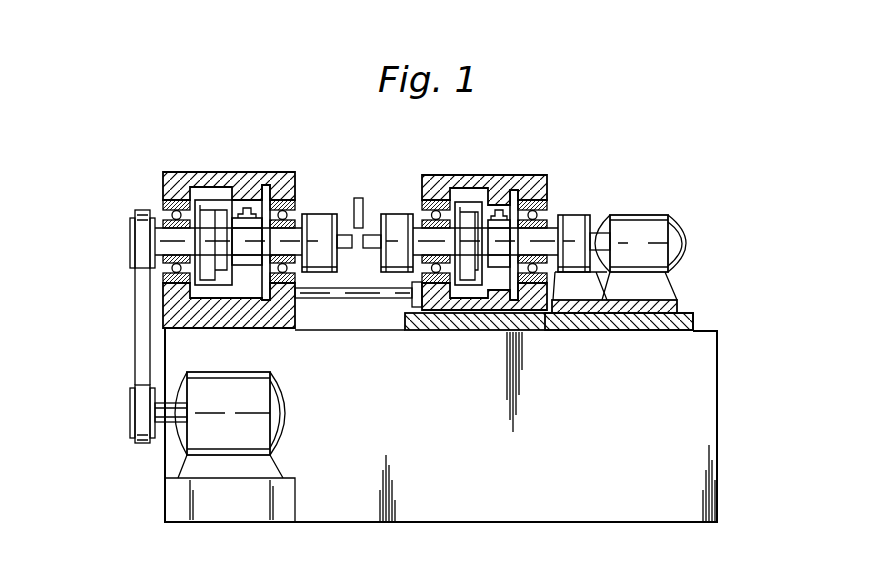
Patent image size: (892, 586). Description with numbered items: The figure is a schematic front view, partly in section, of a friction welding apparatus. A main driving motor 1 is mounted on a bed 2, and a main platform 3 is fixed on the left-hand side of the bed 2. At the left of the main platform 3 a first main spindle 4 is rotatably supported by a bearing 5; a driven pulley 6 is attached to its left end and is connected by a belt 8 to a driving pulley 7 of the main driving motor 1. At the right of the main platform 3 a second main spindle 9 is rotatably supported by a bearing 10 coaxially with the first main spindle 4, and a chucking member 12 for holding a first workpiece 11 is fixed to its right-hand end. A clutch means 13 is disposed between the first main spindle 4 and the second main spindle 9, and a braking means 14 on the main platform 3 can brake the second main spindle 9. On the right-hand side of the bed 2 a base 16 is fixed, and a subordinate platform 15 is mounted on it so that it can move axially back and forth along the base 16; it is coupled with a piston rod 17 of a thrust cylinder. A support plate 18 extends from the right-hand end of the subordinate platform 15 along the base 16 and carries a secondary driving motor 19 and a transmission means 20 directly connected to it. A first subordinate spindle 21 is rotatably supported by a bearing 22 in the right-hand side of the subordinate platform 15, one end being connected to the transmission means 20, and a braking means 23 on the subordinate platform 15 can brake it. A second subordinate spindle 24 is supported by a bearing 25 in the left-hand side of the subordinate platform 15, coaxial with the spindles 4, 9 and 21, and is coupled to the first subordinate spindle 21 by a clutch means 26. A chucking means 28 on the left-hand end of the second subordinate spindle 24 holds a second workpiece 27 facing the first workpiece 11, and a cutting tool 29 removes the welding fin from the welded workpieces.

The main driving motor 1 is at (282, 428).
The bed 2 is at (706, 355).
The main platform 3 is at (272, 325).
The first main spindle 4 is at (163, 205).
The bearing 5 is at (163, 278).
The driven pulley 6 is at (131, 230).
The driving pulley 7 is at (128, 428).
The belt 8 is at (150, 352).
The second main spindle 9 is at (297, 245).
The bearing 10 is at (285, 195).
The first workpiece 11 is at (347, 235).
The chucking member 12 is at (324, 262).
The clutch means 13 is at (212, 212).
The braking means 14 is at (247, 205).
The subordinate platform 15 is at (533, 332).
The base 16 is at (510, 328).
The piston rod 17 is at (357, 300).
The support plate 18 is at (630, 322).
The secondary driving motor 19 is at (640, 222).
The transmission means 20 is at (582, 222).
The first subordinate spindle 21 is at (548, 240).
The bearing 22 is at (556, 332).
The braking means 23 is at (500, 208).
The second subordinate spindle 24 is at (425, 235).
The bearing 25 is at (426, 308).
The clutch means 26 is at (468, 212).
The second workpiece 27 is at (378, 237).
The chucking means 28 is at (401, 262).
The cutting tool 29 is at (358, 198).